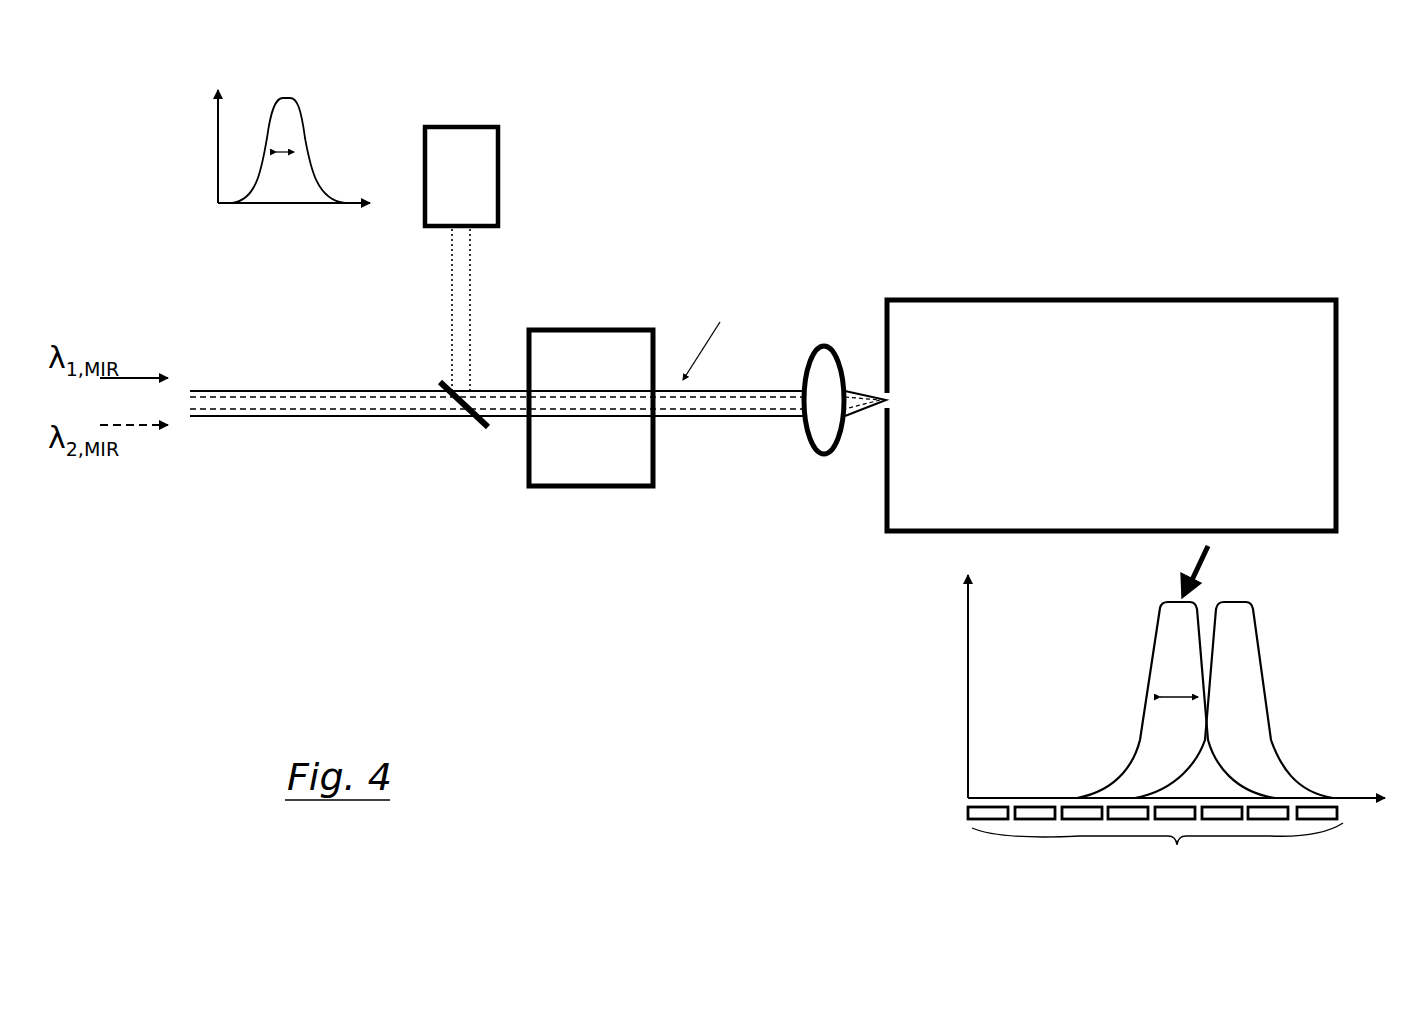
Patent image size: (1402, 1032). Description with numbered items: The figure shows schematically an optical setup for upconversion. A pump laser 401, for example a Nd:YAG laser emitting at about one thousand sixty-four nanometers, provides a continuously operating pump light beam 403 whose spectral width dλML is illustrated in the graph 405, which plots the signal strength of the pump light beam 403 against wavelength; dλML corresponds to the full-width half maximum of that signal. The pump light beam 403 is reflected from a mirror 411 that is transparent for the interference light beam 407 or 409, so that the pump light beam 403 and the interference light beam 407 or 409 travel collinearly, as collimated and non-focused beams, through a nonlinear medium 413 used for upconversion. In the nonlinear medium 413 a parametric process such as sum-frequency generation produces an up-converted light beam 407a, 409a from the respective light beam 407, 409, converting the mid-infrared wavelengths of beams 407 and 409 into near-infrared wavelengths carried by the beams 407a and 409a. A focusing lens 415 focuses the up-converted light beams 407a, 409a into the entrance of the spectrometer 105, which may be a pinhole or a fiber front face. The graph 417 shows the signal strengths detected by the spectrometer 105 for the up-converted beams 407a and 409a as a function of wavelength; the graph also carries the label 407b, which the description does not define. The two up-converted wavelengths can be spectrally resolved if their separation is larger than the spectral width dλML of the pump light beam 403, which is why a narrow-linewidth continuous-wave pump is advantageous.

The spectrometer 105 is at (1247, 298).
The pump laser 401 is at (503, 136).
The pump light beam 403 is at (471, 310).
The graph 405 is at (198, 150).
The interference light beam 407 is at (262, 392).
The up-converted light beam 407a is at (1160, 612).
The second upconverted near-infrared peak 407b is at (1258, 609).
The interference light beam 409 is at (214, 417).
The up-converted light beam 409a is at (672, 417).
The mirror 411 is at (478, 430).
The nonlinear medium 413 is at (597, 326).
The focusing lens 415 is at (812, 352).
The graph 417 is at (932, 622).